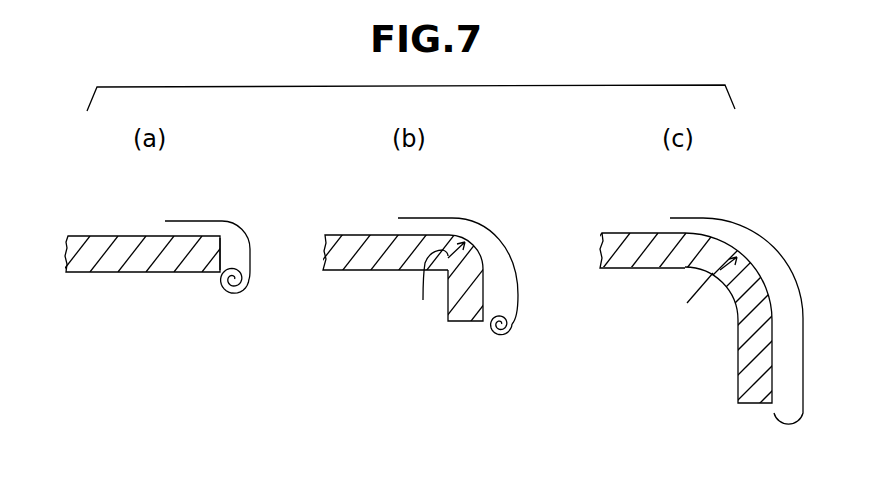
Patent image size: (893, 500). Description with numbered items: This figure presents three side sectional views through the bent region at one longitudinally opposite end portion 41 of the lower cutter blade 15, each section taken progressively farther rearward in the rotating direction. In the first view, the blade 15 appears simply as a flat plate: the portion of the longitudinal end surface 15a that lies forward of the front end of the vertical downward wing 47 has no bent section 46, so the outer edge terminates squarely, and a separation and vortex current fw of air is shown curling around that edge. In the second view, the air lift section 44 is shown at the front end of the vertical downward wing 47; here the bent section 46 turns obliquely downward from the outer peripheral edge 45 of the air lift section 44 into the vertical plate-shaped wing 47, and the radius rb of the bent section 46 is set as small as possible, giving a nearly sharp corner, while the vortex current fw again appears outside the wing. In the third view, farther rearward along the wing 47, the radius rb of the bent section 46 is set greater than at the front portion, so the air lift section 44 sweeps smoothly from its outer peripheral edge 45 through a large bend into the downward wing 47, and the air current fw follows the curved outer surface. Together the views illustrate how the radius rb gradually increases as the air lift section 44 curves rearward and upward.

The lower cutter blade 15 is at (136, 296).
The longitudinal end surface 15a is at (221, 248).
The longitudinally opposite end portion 41 is at (102, 245).
The air lift section 44 is at (360, 240).
The outer peripheral edge 45 is at (453, 234).
The bent section 46 is at (473, 240).
The vertical downward wing 47 is at (458, 310).
The radius of the bent section rb is at (558, 290).
The separation and vortex current of air fw is at (500, 325).